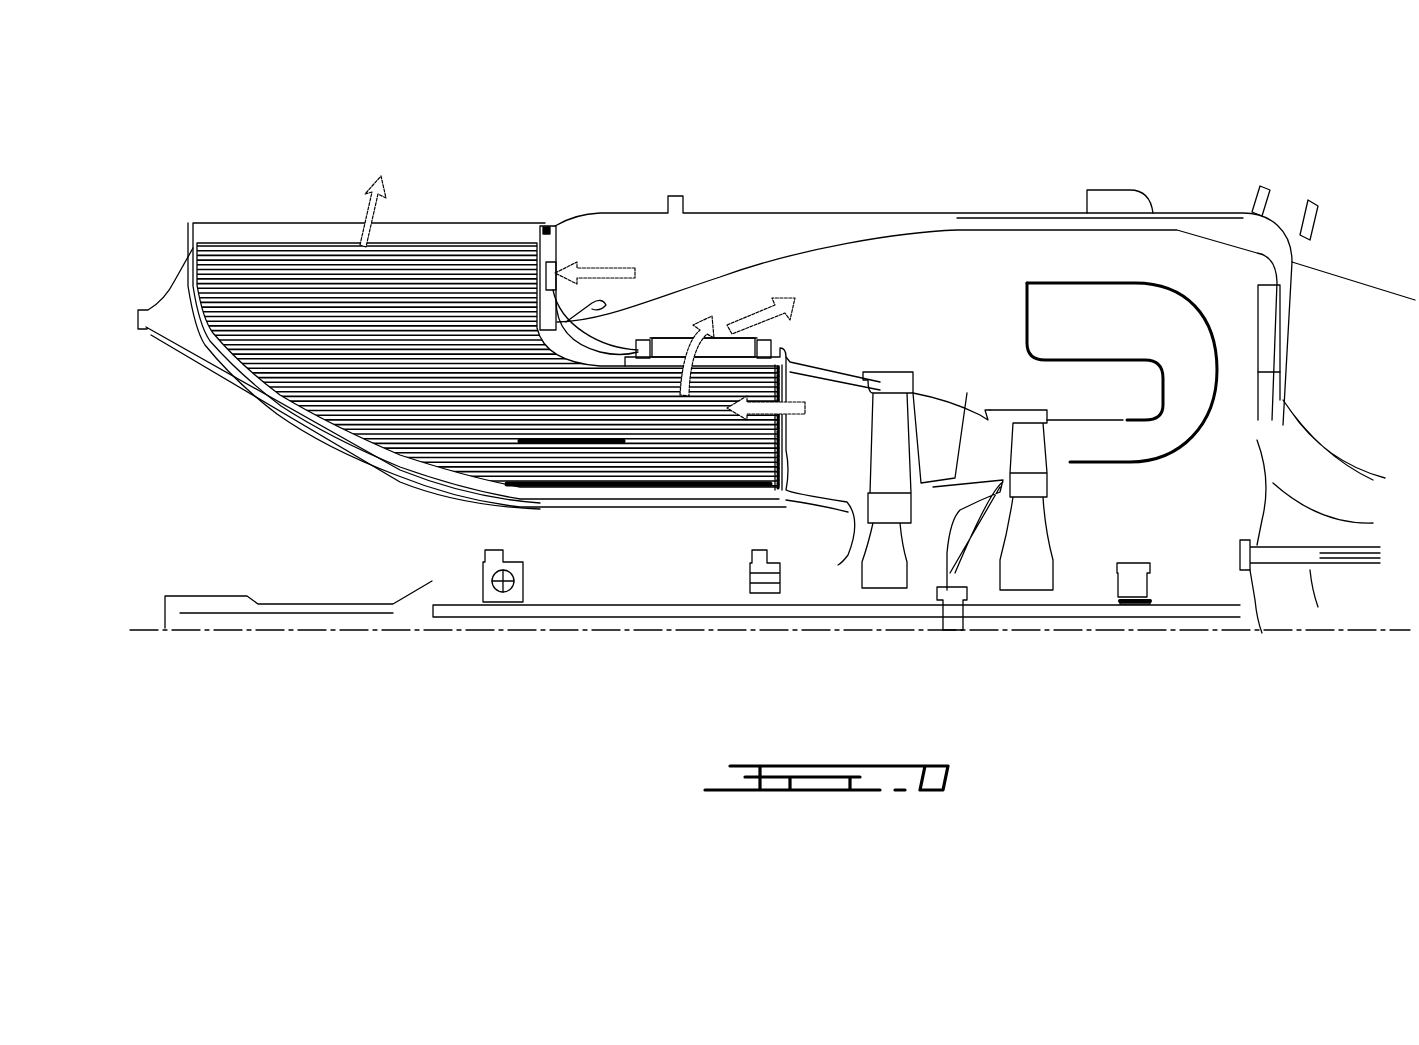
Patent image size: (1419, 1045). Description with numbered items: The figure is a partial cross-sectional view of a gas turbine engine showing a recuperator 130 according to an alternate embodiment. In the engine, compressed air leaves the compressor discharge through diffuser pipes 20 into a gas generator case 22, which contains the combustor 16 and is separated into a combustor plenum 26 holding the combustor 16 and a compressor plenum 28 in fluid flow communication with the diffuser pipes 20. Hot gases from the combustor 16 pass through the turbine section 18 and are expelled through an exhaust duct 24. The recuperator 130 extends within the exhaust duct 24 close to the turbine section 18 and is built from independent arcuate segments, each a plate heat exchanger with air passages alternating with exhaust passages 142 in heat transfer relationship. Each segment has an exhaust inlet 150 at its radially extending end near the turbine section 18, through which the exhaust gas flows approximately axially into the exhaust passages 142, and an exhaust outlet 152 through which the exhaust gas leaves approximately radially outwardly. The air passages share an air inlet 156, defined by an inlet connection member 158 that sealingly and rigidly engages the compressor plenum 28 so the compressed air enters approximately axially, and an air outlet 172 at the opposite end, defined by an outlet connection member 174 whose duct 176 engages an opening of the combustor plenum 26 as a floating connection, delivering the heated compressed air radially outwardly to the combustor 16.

The combustor 16 is at (1080, 318).
The turbine section 18 is at (916, 645).
The diffuser pipes 20 is at (1198, 225).
The gas generator case 22 is at (806, 212).
The exhaust duct 24 is at (190, 284).
The combustor plenum 26 is at (1073, 397).
The compressor plenum 28 is at (747, 235).
The recuperator 130 is at (247, 275).
The exhaust passages 142 is at (287, 360).
The exhaust inlet 150 is at (800, 455).
The exhaust outlet 152 is at (457, 243).
The air inlet 156 is at (550, 270).
The inlet connection member 158 is at (553, 234).
The air outlet 172 is at (678, 340).
The outlet connection member 174 is at (777, 345).
The duct 176 is at (640, 340).